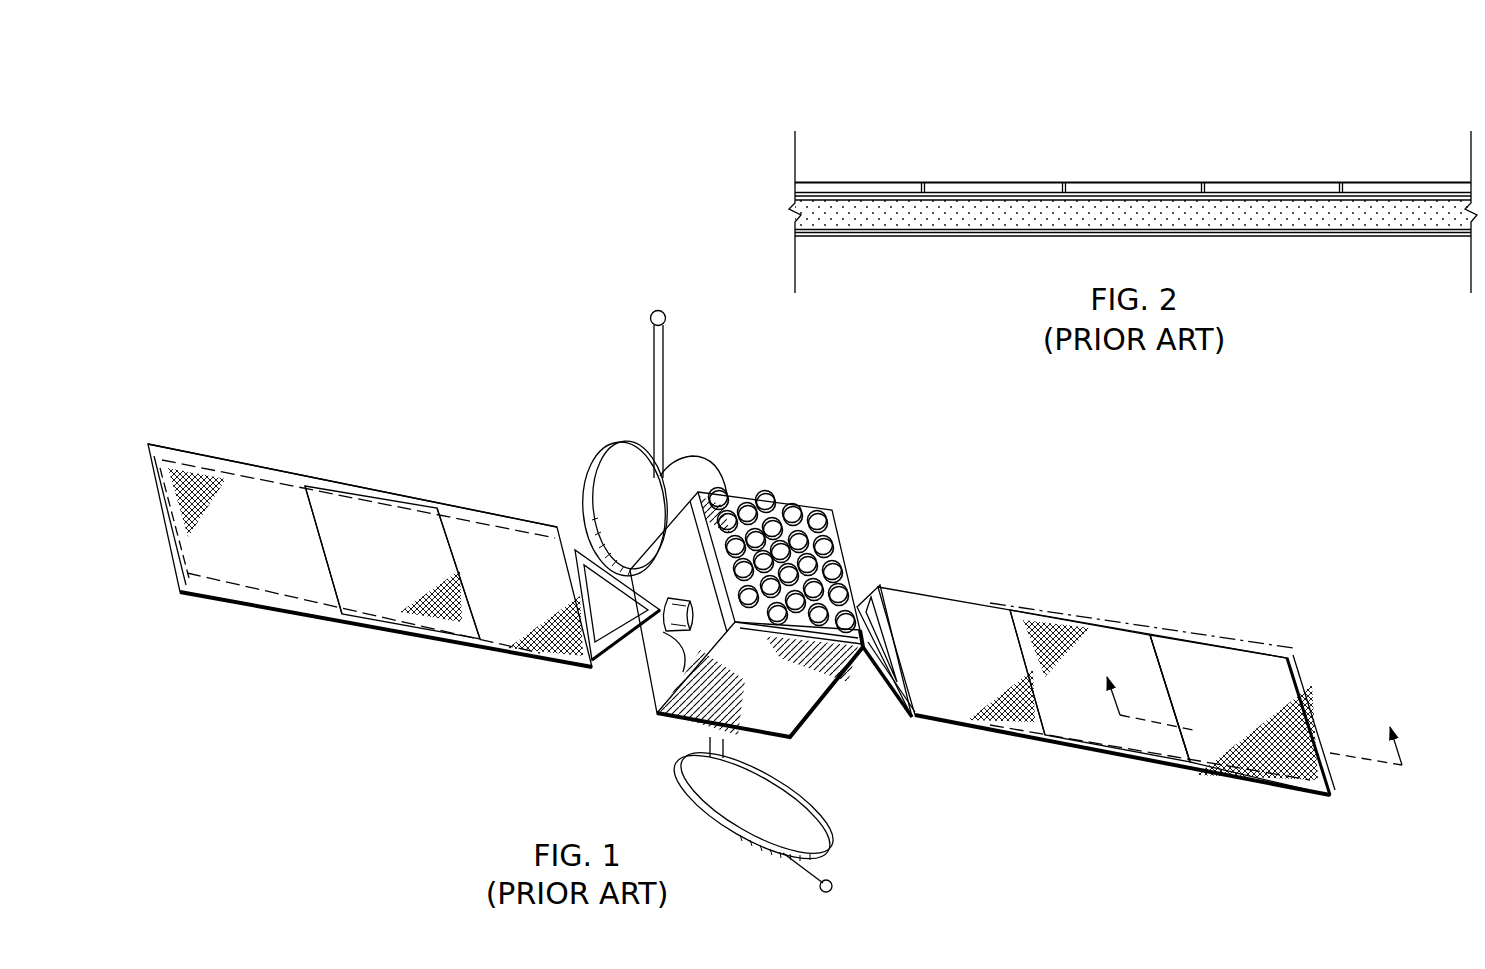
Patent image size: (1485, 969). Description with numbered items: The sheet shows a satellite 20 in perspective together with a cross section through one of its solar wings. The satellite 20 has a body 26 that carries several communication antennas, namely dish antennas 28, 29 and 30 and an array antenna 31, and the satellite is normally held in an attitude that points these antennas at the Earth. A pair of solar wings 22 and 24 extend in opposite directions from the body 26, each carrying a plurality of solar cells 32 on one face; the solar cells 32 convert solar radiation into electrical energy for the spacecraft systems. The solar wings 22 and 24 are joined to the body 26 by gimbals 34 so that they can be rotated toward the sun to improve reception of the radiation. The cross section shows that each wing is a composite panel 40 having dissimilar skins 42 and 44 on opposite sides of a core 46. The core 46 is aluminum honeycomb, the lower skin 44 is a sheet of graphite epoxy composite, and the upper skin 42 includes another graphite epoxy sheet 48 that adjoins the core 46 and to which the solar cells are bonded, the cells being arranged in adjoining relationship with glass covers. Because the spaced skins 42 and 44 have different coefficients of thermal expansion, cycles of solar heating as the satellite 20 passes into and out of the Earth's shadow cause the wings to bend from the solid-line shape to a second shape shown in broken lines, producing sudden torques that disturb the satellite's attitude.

In FIG. 1, the satellite 20 is at (618, 393).
In FIG. 1, the solar wing 22 is at (251, 471).
In FIG. 1, the solar wing 24 is at (1203, 640).
In FIG. 1, the body 26 is at (657, 712).
In FIG. 1, the dish antenna 28 is at (605, 448).
In FIG. 1, the dish antenna 29 is at (721, 472).
In FIG. 1, the dish antenna 30 is at (813, 817).
In FIG. 1, the array antenna 31 is at (822, 510).
In FIG. 1, the solar cell 32 is at (1057, 625).
In FIG. 2, the solar cell 32 is at (1153, 182).
In FIG. 1, the gimbal 34 is at (680, 672).
In FIG. 2, the composite panel 40 is at (1005, 185).
In FIG. 2, the upper skin 42 is at (1108, 185).
In FIG. 2, the lower skin 44 is at (1290, 237).
In FIG. 2, the core 46 is at (1280, 213).
In FIG. 2, the sheet 48 is at (1362, 200).